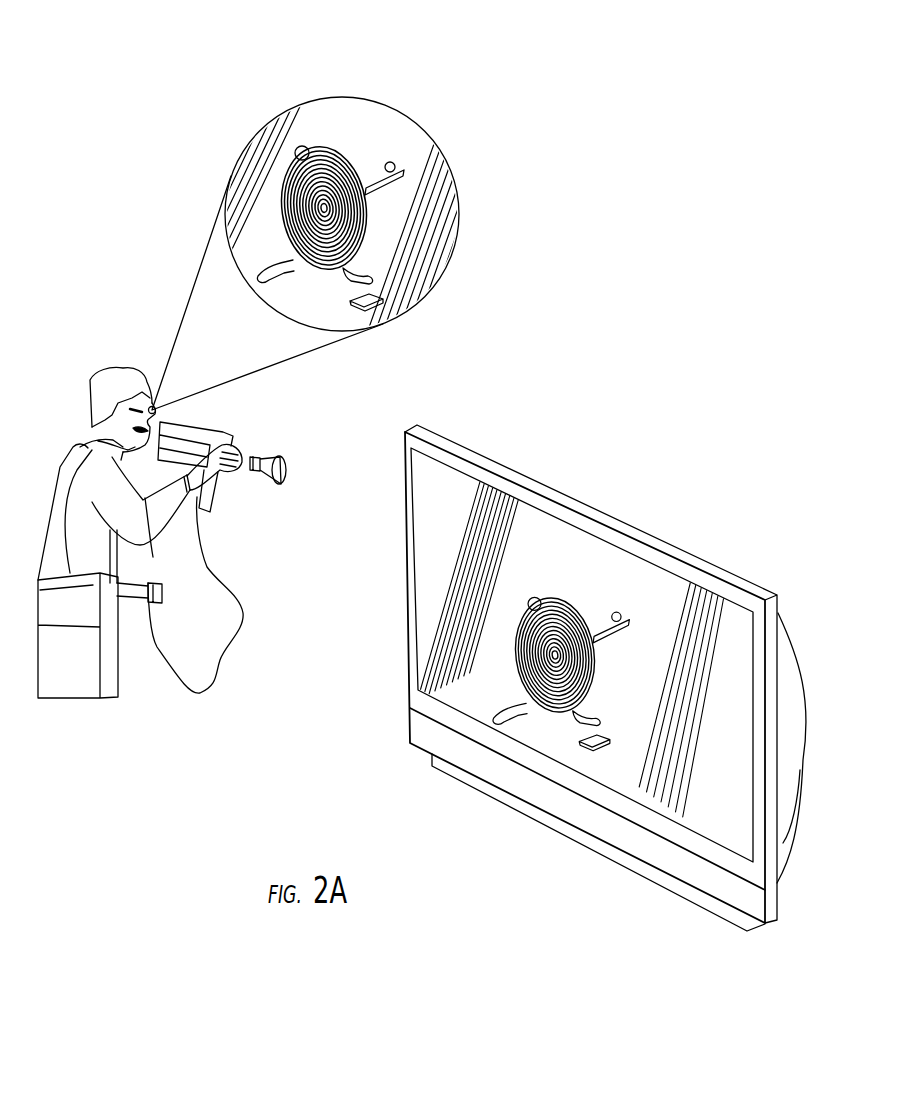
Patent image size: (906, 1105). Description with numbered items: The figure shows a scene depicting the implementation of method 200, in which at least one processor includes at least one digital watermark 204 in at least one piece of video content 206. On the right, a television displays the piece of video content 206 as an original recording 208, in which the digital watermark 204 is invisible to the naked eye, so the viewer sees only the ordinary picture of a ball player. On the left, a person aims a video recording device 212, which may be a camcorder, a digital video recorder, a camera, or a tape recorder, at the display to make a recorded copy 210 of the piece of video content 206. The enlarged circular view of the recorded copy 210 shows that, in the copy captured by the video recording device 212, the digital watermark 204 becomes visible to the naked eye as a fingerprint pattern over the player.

The method 200 is at (478, 70).
The digital watermark 204 is at (285, 177).
The piece of video content 206 is at (605, 678).
The original recording 208 is at (603, 558).
The recorded copy 210 is at (461, 257).
The video recording device 212 is at (227, 437).